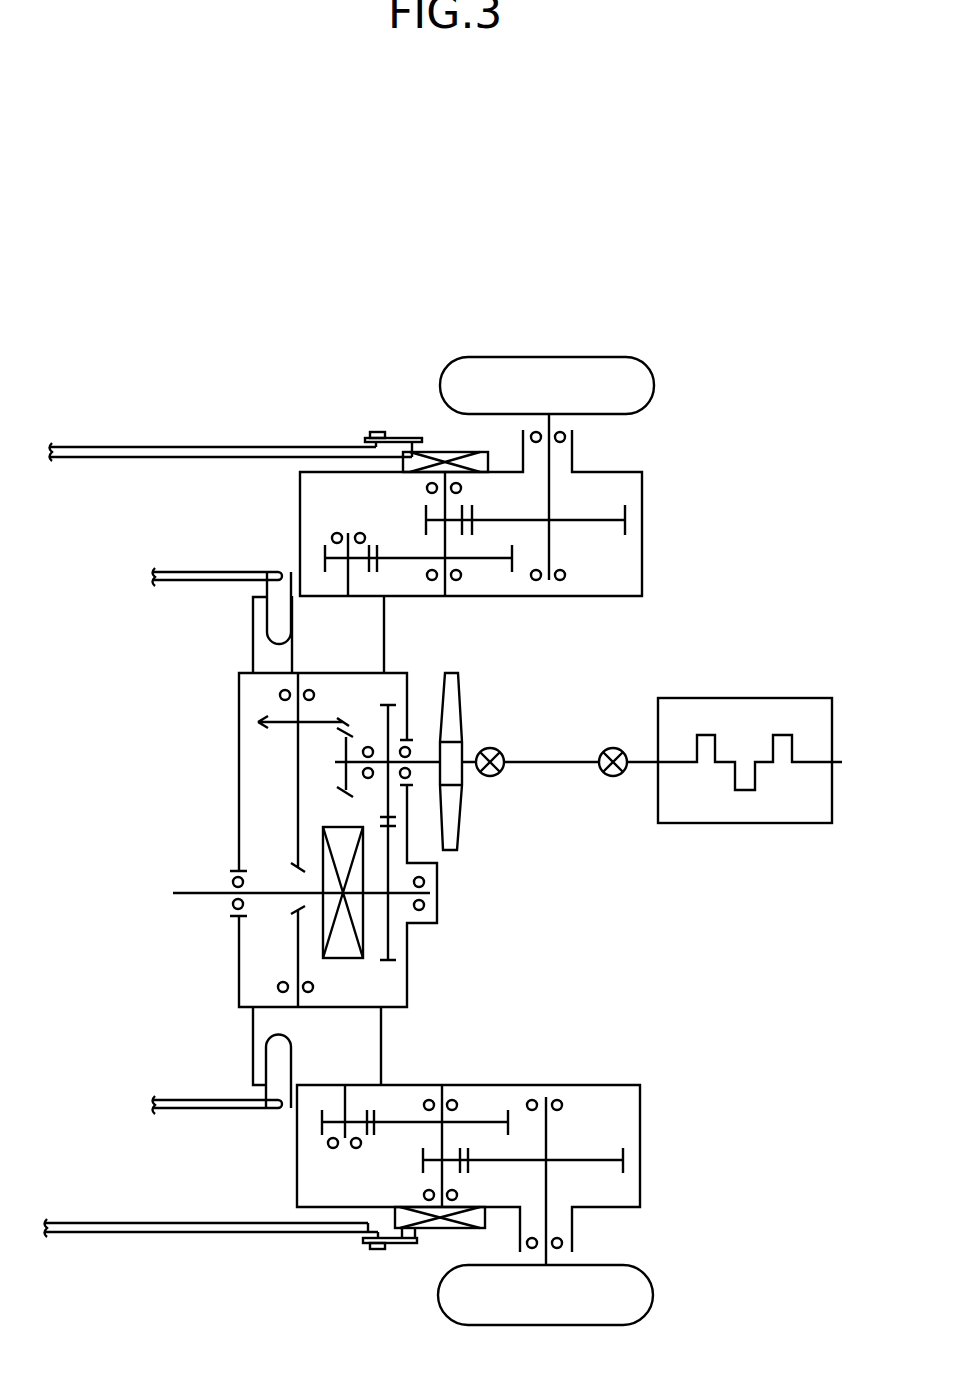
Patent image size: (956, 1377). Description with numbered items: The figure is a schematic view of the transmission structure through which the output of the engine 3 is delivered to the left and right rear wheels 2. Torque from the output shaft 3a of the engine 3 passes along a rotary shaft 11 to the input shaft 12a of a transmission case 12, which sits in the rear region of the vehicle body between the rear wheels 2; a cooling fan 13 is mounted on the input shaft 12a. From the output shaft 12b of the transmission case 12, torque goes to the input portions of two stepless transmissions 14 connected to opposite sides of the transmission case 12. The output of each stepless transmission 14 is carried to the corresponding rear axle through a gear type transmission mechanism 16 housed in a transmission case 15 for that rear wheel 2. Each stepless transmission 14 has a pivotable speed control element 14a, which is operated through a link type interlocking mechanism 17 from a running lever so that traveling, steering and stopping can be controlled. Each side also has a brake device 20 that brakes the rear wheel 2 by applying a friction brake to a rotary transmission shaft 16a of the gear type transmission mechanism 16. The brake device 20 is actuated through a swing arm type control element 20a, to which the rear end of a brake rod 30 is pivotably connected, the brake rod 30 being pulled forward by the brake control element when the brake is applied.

The rear wheel 2 is at (652, 383).
The engine 3 is at (782, 823).
The output shaft 3a is at (642, 758).
The rotary shaft 11 is at (550, 763).
The transmission case 12 is at (408, 960).
The input shaft 12a is at (420, 763).
The output shaft 12b is at (298, 778).
The cooling fan 13 is at (452, 712).
The stepless transmission 14 is at (362, 643).
The speed control element 14a is at (278, 617).
The transmission case 15 is at (642, 543).
The gear type transmission mechanism 16 is at (593, 545).
The rotary transmission shaft 16a is at (443, 543).
The link type interlocking mechanism 17 is at (214, 546).
The brake device 20 is at (450, 452).
The control element 20a is at (395, 432).
The brake rod 30 is at (158, 447).